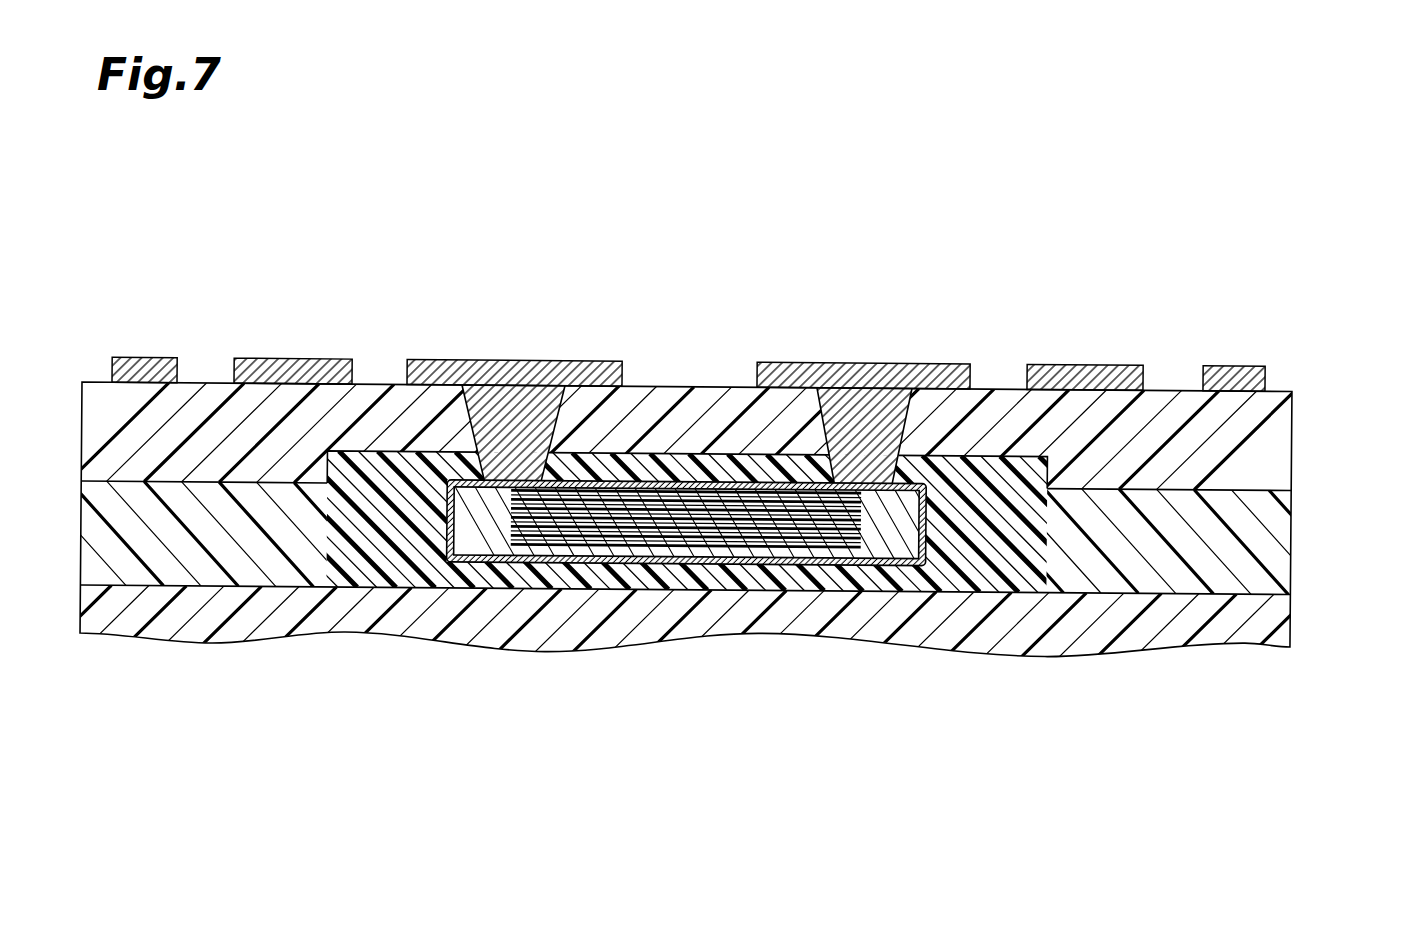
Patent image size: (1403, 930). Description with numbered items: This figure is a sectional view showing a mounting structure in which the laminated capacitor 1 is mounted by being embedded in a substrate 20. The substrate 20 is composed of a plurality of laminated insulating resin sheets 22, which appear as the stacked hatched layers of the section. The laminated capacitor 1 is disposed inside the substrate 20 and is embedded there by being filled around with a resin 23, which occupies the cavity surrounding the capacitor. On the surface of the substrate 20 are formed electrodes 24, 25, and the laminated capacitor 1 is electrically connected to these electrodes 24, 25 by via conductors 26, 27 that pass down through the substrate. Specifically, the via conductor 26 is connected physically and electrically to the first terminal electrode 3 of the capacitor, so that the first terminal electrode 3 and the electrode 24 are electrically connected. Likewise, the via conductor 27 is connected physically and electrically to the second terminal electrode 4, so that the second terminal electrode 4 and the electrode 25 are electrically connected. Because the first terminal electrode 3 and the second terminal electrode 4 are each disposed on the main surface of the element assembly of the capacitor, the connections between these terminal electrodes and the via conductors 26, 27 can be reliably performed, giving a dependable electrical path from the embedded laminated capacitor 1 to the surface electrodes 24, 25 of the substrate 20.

The laminated capacitor 1 is at (692, 478).
The first terminal electrode 3 is at (447, 487).
The second terminal electrode 4 is at (923, 492).
The substrate 20 is at (1300, 386).
The insulating resin sheets 22 is at (1275, 552).
The resin 23 is at (1025, 488).
The electrode 24 is at (594, 370).
The electrode 25 is at (776, 373).
The via conductor 26 is at (505, 388).
The via conductor 27 is at (858, 395).